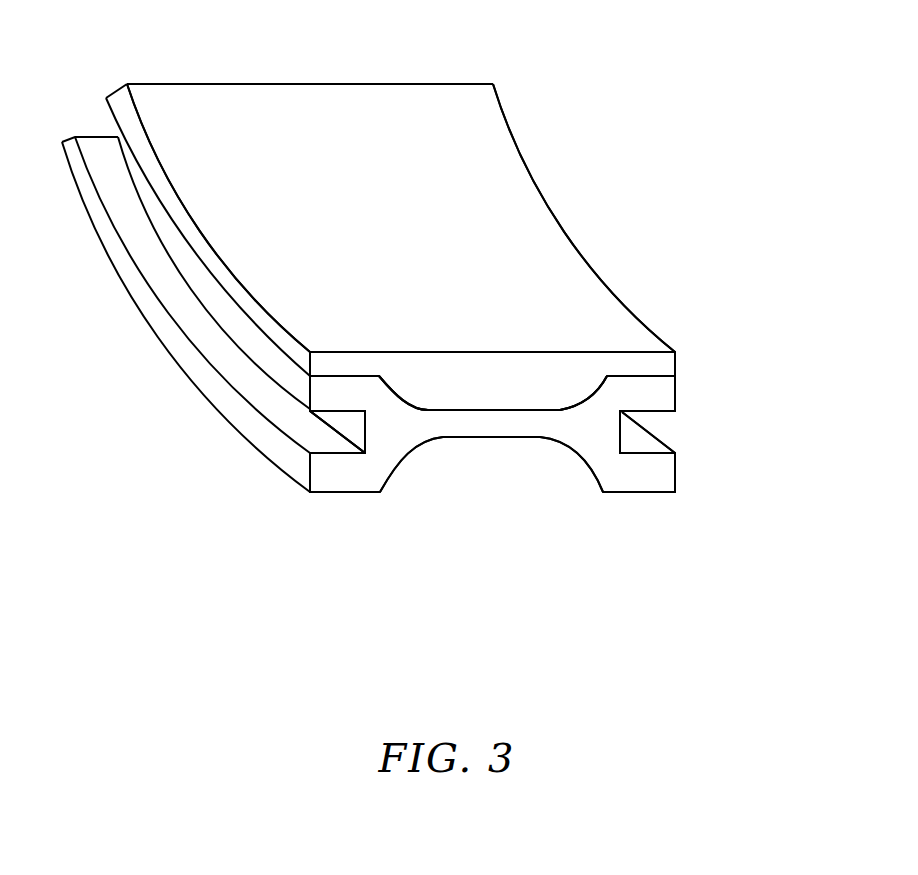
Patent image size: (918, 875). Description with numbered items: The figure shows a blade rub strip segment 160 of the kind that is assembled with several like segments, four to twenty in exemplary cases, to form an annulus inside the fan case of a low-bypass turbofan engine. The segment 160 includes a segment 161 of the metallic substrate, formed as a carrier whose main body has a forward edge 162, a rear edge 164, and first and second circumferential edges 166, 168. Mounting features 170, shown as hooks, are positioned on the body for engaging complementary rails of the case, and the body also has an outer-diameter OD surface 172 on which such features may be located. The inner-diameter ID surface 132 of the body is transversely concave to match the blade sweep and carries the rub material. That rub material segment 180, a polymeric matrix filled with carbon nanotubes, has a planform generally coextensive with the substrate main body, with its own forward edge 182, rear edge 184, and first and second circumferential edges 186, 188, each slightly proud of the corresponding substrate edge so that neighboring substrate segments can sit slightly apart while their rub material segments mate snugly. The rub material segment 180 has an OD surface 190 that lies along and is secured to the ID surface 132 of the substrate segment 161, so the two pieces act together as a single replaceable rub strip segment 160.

The ID surface 132 is at (527, 410).
The rub strip segment 160 is at (302, 563).
The segment of the substrate 161 is at (521, 425).
The forward edge 162 is at (262, 352).
The rear edge 164 is at (677, 394).
The first circumferential edge 166 is at (410, 427).
The second circumferential edge 168 is at (116, 93).
The mounting features 170 is at (347, 470).
The OD surface 172 is at (494, 438).
The rub material segment 180 is at (427, 223).
The forward edge 182 is at (268, 327).
The rear edge 184 is at (580, 254).
The first circumferential edge 186 is at (453, 380).
The second circumferential edge 188 is at (292, 84).
The OD surface 190 is at (468, 411).